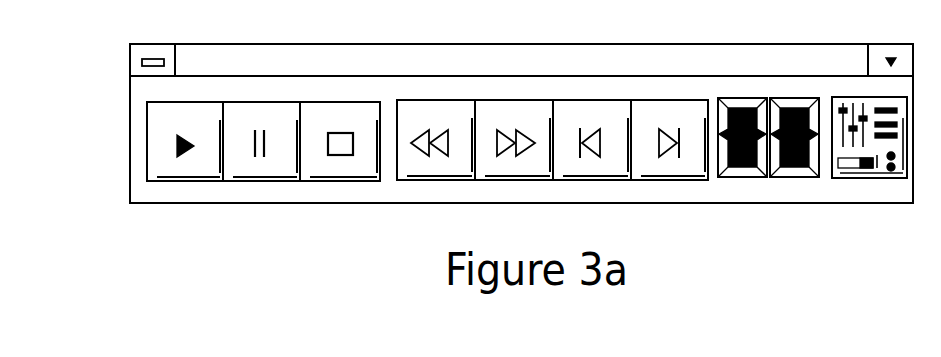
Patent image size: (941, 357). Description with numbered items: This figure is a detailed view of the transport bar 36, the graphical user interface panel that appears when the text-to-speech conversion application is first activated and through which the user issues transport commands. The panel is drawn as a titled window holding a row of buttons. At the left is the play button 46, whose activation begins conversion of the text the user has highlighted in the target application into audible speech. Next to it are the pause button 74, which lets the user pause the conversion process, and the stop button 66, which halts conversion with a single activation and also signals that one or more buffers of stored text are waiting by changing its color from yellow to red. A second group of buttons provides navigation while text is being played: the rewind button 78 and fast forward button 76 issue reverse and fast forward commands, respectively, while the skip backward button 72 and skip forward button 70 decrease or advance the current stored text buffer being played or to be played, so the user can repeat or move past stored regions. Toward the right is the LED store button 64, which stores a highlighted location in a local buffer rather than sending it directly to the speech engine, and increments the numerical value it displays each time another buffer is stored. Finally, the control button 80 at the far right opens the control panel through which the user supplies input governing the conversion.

The transport bar 36 is at (218, 199).
The play button 46 is at (158, 137).
The pause button 74 is at (240, 115).
The stop button 66 is at (340, 172).
The rewind button 78 is at (441, 170).
The fast forward button 76 is at (490, 168).
The skip backward button 72 is at (612, 163).
The skip forward button 70 is at (695, 165).
The LED store button 64 is at (793, 100).
The control button 80 is at (897, 107).